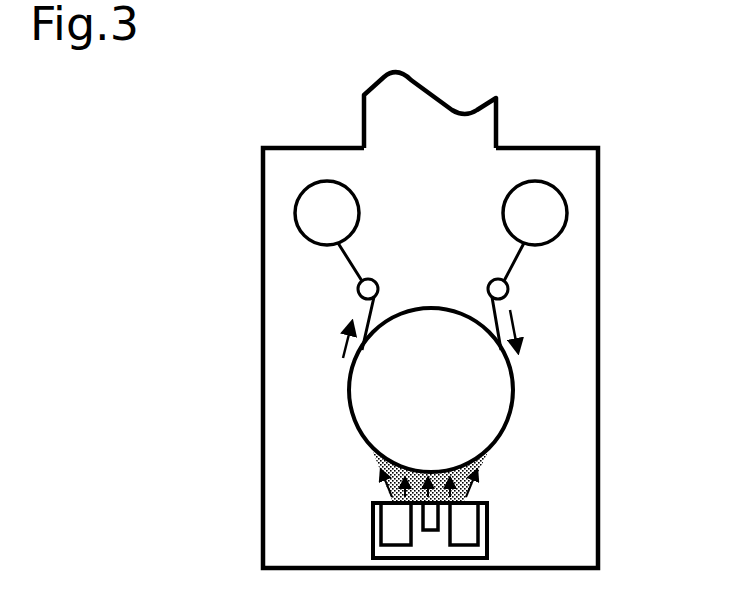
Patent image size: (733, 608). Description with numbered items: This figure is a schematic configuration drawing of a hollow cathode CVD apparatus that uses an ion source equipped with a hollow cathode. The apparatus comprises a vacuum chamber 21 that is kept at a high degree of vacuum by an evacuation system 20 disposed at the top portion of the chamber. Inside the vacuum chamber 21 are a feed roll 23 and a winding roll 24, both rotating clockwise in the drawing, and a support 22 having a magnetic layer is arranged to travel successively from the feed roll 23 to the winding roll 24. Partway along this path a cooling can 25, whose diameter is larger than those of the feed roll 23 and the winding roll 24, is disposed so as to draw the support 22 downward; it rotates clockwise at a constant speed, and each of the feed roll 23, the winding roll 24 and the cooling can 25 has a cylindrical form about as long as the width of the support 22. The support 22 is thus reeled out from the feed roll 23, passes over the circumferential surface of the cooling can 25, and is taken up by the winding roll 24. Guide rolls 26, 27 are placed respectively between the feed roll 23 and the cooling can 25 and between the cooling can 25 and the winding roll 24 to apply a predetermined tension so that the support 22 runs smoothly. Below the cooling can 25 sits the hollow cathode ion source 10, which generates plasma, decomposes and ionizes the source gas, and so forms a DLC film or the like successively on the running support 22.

The hollow cathode ion source 10 is at (487, 532).
The evacuation system 20 is at (483, 125).
The vacuum chamber 21 is at (600, 168).
The support having the magnetic layer 22 is at (520, 263).
The feed roll 23 is at (550, 215).
The winding roll 24 is at (315, 217).
The cooling can 25 is at (495, 390).
The guide roll 26 is at (505, 290).
The guide roll 27 is at (362, 290).